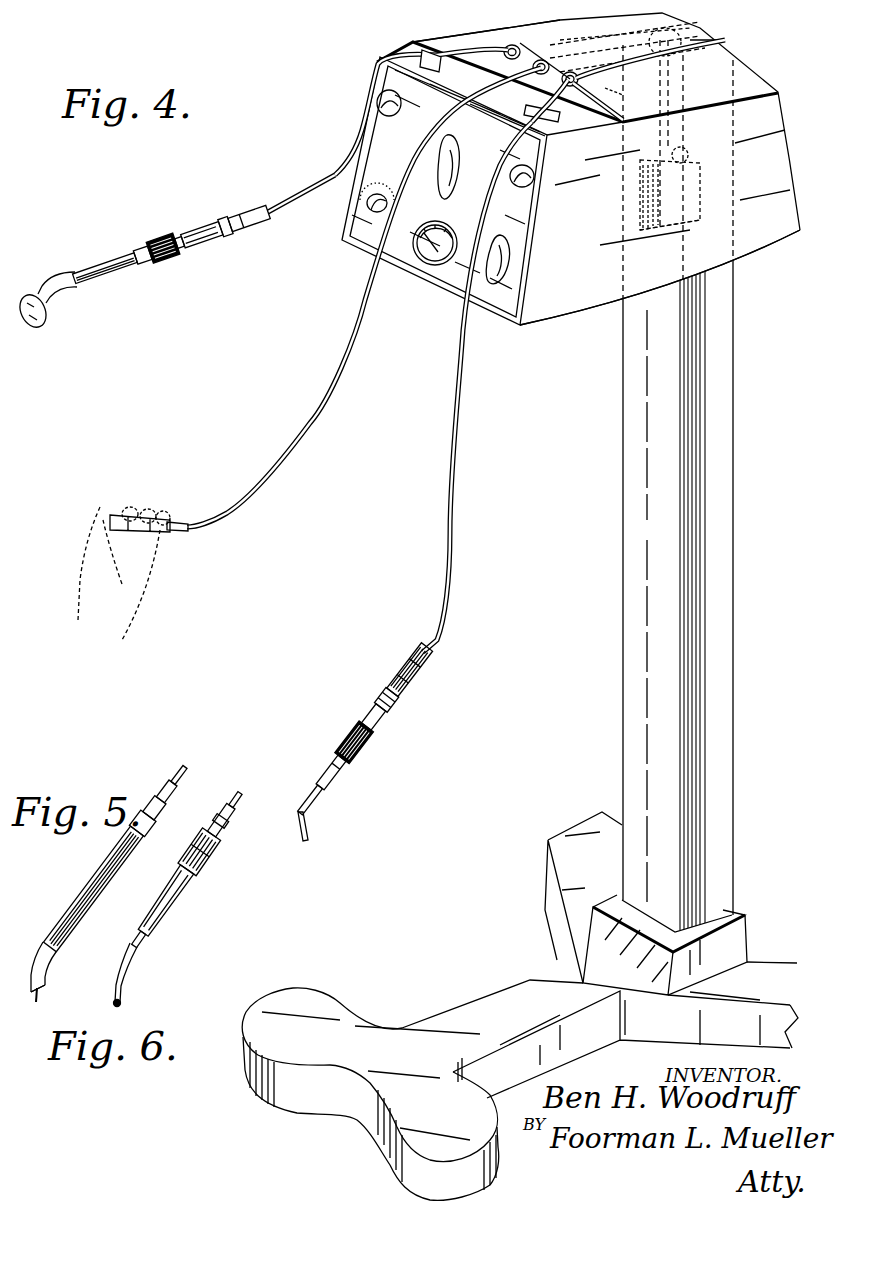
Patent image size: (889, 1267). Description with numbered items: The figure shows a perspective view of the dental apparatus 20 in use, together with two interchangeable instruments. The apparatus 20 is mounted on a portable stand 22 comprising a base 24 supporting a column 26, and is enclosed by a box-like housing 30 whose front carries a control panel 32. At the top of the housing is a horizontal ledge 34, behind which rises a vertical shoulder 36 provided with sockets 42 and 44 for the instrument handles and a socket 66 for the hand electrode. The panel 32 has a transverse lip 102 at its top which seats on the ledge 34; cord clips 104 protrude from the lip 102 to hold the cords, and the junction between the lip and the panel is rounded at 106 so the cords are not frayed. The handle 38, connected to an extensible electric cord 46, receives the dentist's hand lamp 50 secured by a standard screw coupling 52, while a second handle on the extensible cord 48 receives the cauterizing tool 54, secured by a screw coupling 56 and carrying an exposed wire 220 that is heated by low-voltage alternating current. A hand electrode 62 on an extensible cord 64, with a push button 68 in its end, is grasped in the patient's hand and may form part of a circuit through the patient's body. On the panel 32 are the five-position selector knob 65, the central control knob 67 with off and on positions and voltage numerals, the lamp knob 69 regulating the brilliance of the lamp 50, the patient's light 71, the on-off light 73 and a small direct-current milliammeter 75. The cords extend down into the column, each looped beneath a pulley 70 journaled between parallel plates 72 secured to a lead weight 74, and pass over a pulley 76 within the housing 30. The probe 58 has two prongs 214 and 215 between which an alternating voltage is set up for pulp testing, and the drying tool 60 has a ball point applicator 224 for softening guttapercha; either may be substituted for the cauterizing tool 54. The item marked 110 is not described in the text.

In FIG. 4, the apparatus 20 is at (600, 312).
In FIG. 4, the portable stand 22 is at (609, 635).
In FIG. 4, the base 24 is at (489, 1005).
In FIG. 4, the column 26 is at (628, 523).
In FIG. 4, the housing 30 is at (530, 313).
In FIG. 4, the control panel 32 is at (362, 143).
In FIG. 4, the horizontal ledge 34 is at (437, 43).
In FIG. 4, the vertical shoulder 36 is at (600, 112).
In FIG. 4, the handle 38 is at (194, 229).
In FIG. 4, the socket 42 is at (508, 49).
In FIG. 4, the socket 44 is at (607, 90).
In FIG. 4, the extensible electric cord 46 is at (287, 198).
In FIG. 4, the extensible electric cord 48 is at (448, 538).
In FIG. 4, the dentist's hand lamp 50 is at (90, 262).
In FIG. 4, the screw coupling 52 is at (157, 237).
In FIG. 4, the cauterizing tool 54 is at (322, 783).
In FIG. 4, the screw coupling 56 is at (357, 753).
In FIG. 5, the probe 58 is at (90, 878).
In FIG. 6, the drying tool 60 is at (173, 912).
In FIG. 4, the hand electrode 62 is at (177, 532).
In FIG. 4, the extensible cord 64 is at (284, 456).
In FIG. 4, the selector knob 65 is at (508, 269).
In FIG. 4, the socket 66 is at (618, 80).
In FIG. 4, the central control knob 67 is at (438, 192).
In FIG. 4, the push button 68 is at (110, 513).
In FIG. 4, the lamp knob 69 is at (360, 218).
In FIG. 4, the pulley 70 is at (686, 150).
In FIG. 4, the patient's light 71 is at (376, 104).
In FIG. 4, the parallel plates 72 is at (702, 168).
In FIG. 4, the on-off light 73 is at (532, 186).
In FIG. 4, the lead weight 74 is at (700, 212).
In FIG. 4, the direct-current milliammeter 75 is at (421, 262).
In FIG. 4, the pulley 76 is at (700, 28).
In FIG. 4, the transverse lip 102 is at (393, 57).
In FIG. 4, the cord clips 104 is at (400, 66).
In FIG. 4, the rounded junction 106 is at (543, 152).
In FIG. 4, the handpiece sleeve 110 is at (383, 727).
In FIG. 5, the prong 214 is at (21, 1005).
In FIG. 5, the prong 215 is at (52, 984).
In FIG. 4, the exposed wire 220 is at (310, 834).
In FIG. 6, the ball point applicator 224 is at (121, 1006).